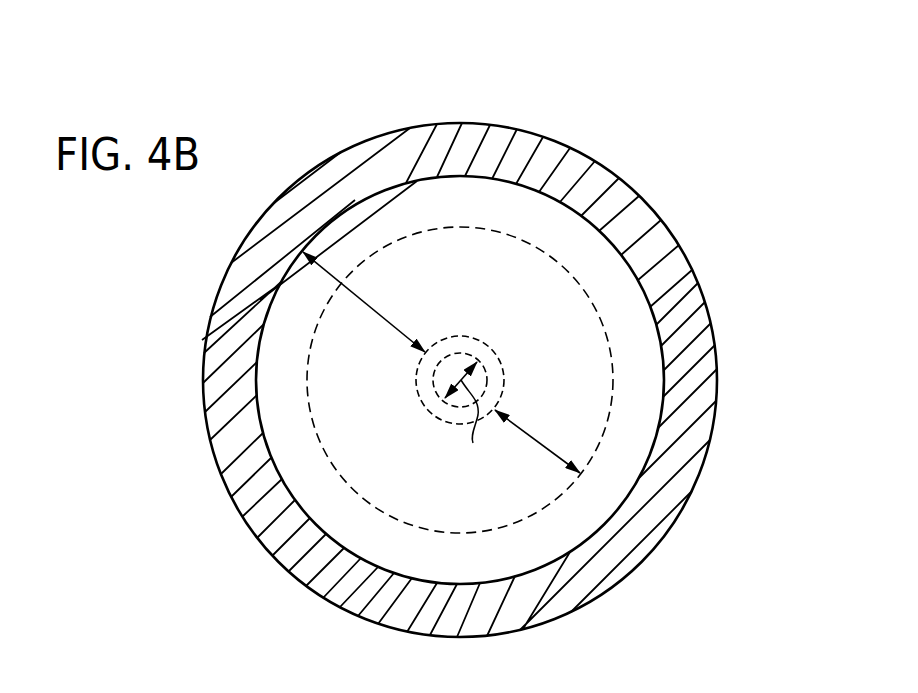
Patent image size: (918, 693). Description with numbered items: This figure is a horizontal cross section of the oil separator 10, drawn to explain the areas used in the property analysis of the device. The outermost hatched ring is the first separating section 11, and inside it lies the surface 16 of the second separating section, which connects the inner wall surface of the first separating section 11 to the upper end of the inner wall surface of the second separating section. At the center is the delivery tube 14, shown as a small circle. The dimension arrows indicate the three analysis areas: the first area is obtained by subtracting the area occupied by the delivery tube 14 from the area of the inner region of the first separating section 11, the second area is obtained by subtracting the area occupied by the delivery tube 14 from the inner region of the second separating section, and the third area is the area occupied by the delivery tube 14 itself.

The oil separator 10 is at (599, 132).
The first separating section 11 is at (632, 207).
The surface 16 is at (613, 290).
The delivery tube 14 is at (488, 361).